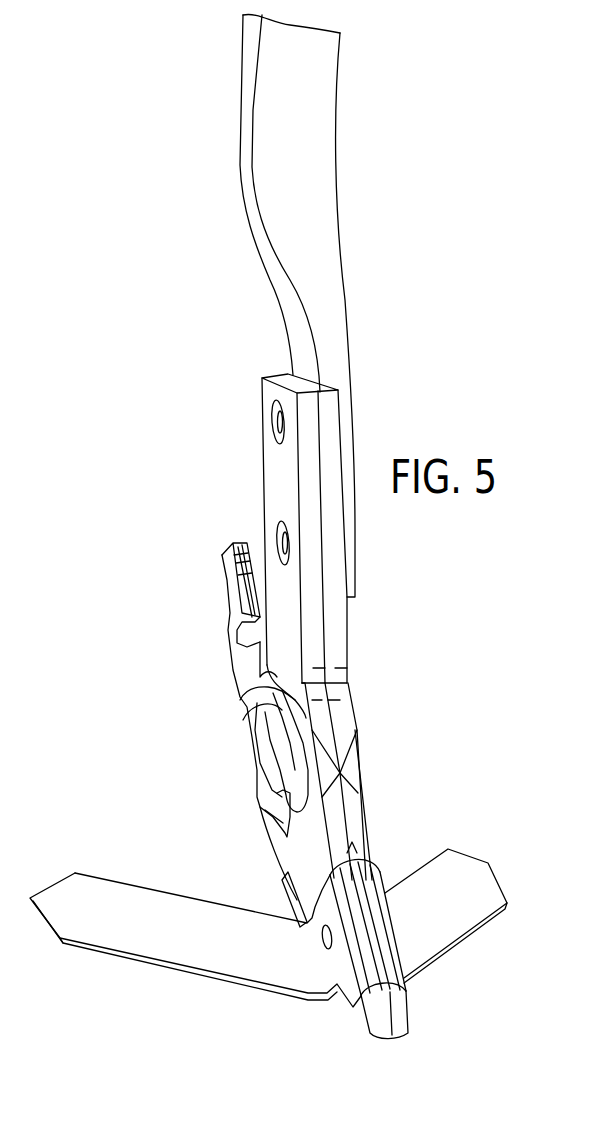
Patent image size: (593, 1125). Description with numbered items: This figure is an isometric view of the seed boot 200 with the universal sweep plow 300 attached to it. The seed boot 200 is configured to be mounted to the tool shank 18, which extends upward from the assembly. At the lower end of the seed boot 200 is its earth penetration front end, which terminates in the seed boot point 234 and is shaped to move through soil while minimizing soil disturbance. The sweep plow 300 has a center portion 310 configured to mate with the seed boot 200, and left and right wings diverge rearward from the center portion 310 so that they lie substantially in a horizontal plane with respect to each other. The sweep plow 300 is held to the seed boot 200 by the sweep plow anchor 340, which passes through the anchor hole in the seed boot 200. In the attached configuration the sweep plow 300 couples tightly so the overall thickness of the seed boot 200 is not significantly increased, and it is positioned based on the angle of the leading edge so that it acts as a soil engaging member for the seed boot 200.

The tool shank 18 is at (332, 262).
The seed boot 200 is at (347, 675).
The seed boot point 234 is at (403, 1022).
The universal sweep plow 300 is at (470, 855).
The center portion 310 is at (381, 870).
The sweep plow anchor 340 is at (322, 940).